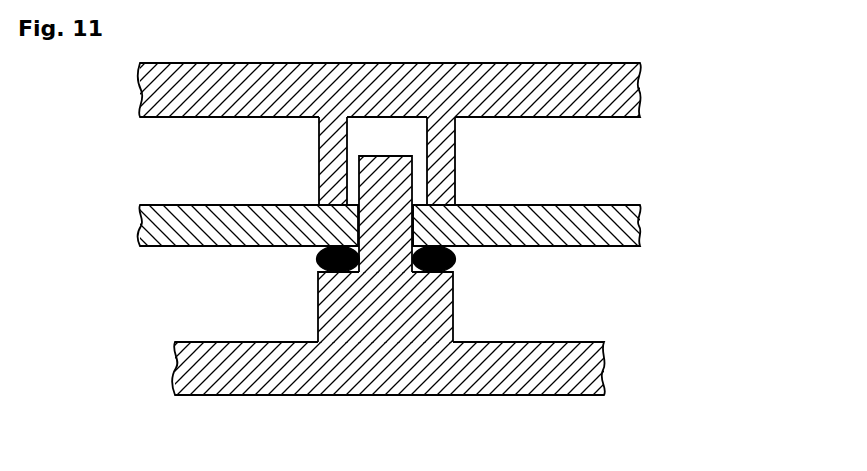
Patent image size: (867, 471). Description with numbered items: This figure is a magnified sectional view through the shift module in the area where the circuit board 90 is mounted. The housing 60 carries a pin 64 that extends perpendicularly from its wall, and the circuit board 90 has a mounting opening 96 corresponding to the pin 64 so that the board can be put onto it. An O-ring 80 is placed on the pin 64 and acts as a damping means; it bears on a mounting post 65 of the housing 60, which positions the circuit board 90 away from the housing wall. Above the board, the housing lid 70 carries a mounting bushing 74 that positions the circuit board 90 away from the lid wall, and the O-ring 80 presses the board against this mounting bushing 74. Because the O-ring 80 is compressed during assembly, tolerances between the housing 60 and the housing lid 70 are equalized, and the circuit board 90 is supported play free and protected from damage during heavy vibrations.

The housing lid 70 is at (550, 78).
The mounting bushings 74 is at (333, 153).
The pins 64 is at (393, 158).
The circuit board 90 is at (552, 223).
The mounting openings 96 is at (418, 222).
The O-rings 80 is at (317, 263).
The mounting posts 65 is at (433, 290).
The housing 60 is at (517, 348).